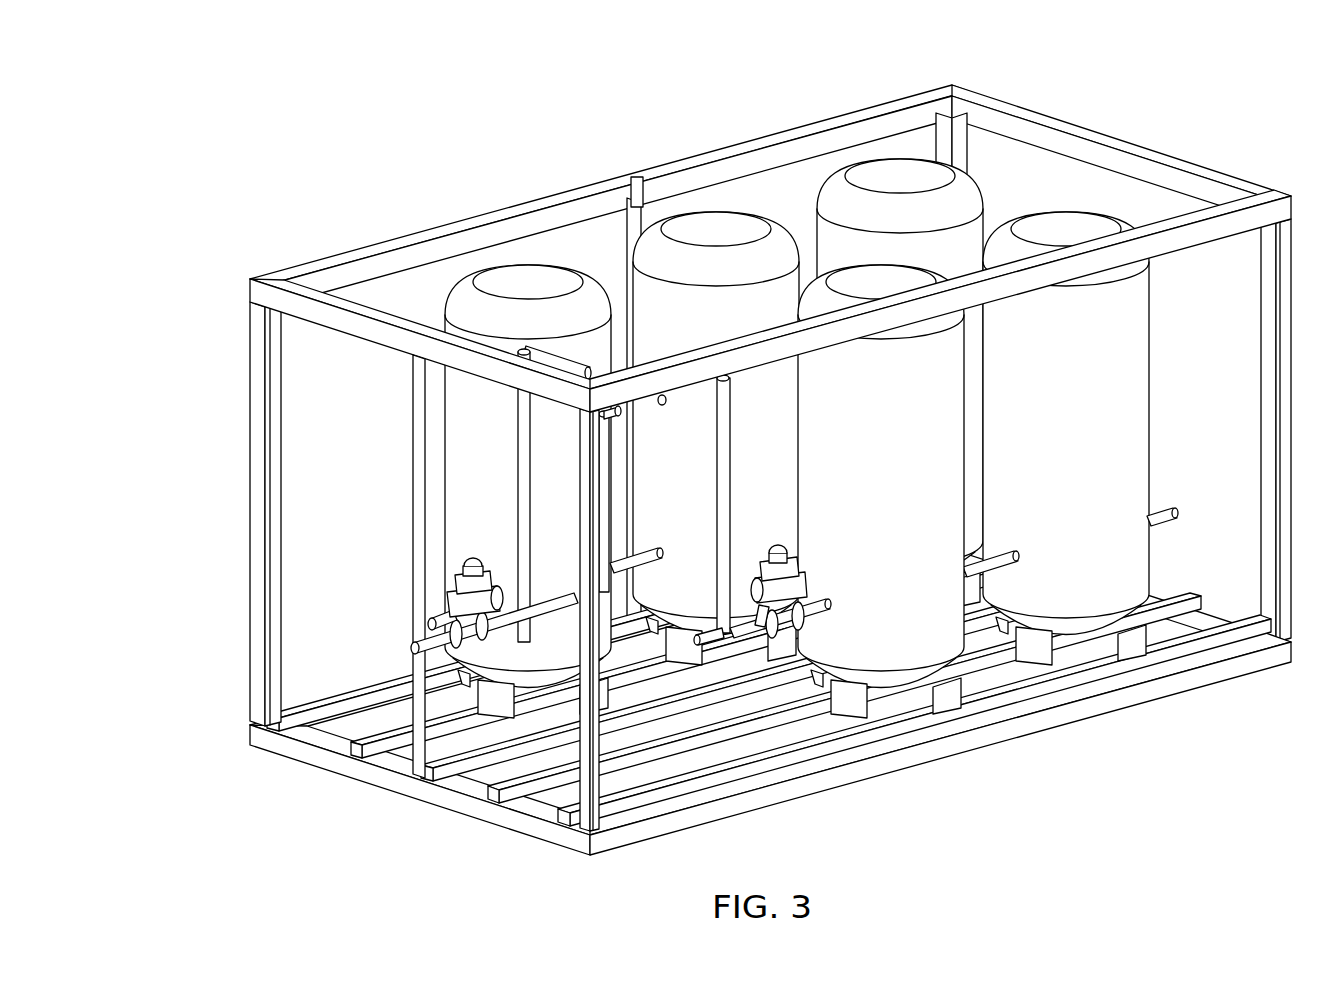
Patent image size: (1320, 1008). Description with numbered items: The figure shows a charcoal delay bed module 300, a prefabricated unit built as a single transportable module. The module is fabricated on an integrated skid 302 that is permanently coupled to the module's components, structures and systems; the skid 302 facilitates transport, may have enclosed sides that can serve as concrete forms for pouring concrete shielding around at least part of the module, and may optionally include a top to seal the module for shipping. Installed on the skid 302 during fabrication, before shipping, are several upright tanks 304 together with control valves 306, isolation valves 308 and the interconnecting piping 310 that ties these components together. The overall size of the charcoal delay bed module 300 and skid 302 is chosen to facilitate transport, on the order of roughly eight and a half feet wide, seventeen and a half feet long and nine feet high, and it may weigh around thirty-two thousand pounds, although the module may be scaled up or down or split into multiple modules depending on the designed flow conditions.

The charcoal delay bed module 300 is at (455, 80).
The integrated skid 302 is at (392, 793).
The tanks 304 is at (901, 459).
The control valves 306 is at (807, 622).
The isolation valves 308 is at (458, 603).
The piping 310 is at (412, 513).